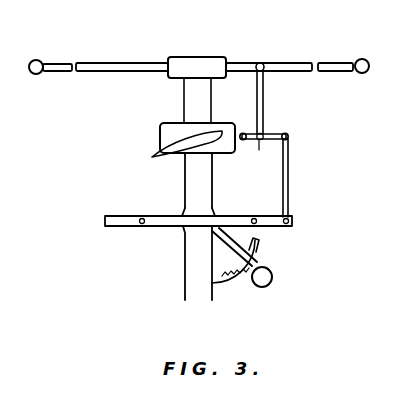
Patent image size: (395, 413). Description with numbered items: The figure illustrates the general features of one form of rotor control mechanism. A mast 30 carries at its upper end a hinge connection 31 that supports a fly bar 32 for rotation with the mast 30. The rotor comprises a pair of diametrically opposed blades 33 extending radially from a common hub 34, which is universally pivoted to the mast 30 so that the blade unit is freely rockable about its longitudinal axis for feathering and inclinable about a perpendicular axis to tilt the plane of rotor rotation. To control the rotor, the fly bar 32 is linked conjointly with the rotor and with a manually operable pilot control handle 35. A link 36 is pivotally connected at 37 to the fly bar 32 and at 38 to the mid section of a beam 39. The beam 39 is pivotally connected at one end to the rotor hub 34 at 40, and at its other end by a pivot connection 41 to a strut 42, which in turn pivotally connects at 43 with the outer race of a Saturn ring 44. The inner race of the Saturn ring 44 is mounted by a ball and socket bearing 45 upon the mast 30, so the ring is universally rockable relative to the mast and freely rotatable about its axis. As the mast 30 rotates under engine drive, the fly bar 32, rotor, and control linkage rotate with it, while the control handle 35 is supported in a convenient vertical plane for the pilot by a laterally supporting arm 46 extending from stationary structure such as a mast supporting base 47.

The mast 30 is at (187, 170).
The hinge connection 31 is at (200, 65).
The fly bar 32 is at (290, 67).
The blades 33 is at (172, 143).
The hub 34 is at (182, 126).
The pilot control handle 35 is at (272, 281).
The link 36 is at (260, 105).
The pivot connection 37 is at (263, 63).
The pivot connection 38 is at (263, 157).
The beam 39 is at (275, 133).
The pivot connection 40 is at (239, 133).
The pivot connection 41 is at (288, 137).
The strut 42 is at (288, 178).
The pivot connection 43 is at (292, 218).
The Saturn ring 44 is at (242, 217).
The ball and socket bearing 45 is at (187, 212).
The laterally supporting arm 46 is at (258, 247).
The mast supporting base 47 is at (188, 265).